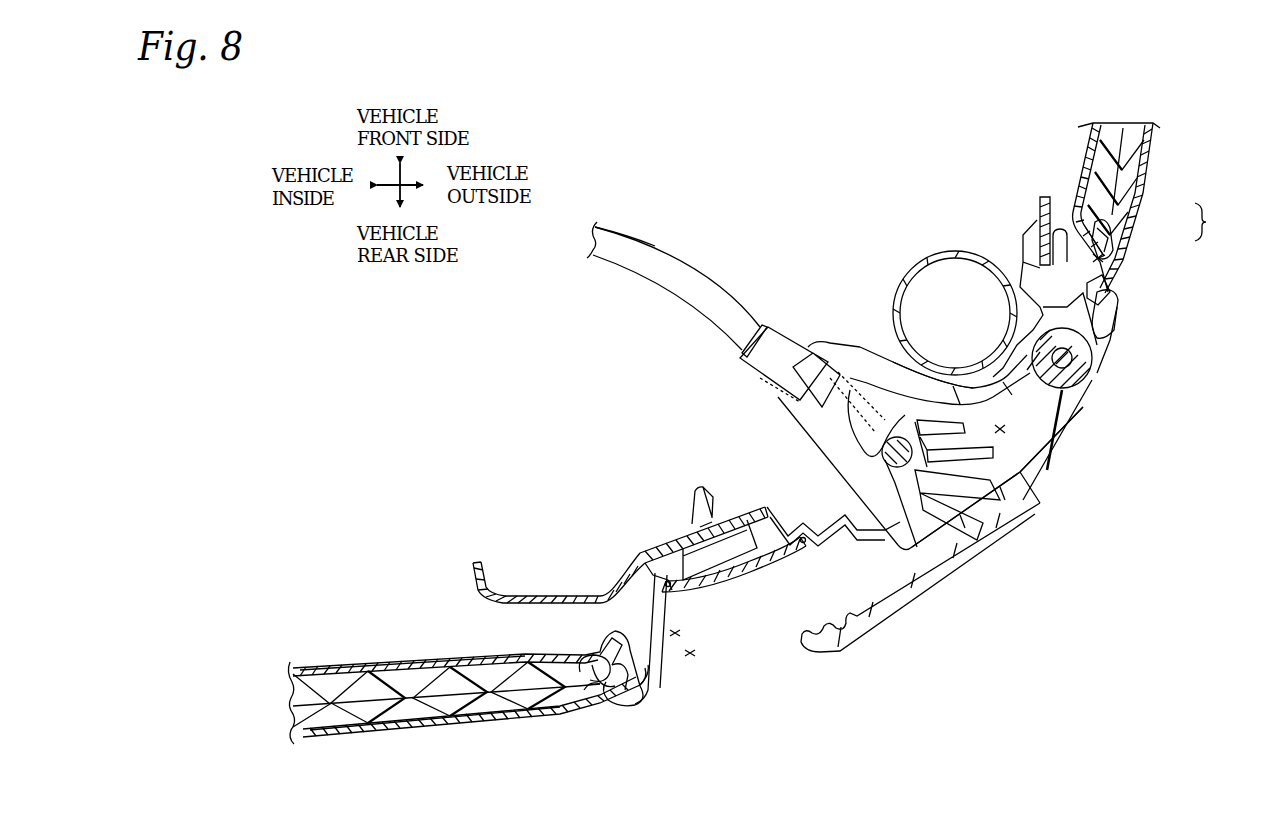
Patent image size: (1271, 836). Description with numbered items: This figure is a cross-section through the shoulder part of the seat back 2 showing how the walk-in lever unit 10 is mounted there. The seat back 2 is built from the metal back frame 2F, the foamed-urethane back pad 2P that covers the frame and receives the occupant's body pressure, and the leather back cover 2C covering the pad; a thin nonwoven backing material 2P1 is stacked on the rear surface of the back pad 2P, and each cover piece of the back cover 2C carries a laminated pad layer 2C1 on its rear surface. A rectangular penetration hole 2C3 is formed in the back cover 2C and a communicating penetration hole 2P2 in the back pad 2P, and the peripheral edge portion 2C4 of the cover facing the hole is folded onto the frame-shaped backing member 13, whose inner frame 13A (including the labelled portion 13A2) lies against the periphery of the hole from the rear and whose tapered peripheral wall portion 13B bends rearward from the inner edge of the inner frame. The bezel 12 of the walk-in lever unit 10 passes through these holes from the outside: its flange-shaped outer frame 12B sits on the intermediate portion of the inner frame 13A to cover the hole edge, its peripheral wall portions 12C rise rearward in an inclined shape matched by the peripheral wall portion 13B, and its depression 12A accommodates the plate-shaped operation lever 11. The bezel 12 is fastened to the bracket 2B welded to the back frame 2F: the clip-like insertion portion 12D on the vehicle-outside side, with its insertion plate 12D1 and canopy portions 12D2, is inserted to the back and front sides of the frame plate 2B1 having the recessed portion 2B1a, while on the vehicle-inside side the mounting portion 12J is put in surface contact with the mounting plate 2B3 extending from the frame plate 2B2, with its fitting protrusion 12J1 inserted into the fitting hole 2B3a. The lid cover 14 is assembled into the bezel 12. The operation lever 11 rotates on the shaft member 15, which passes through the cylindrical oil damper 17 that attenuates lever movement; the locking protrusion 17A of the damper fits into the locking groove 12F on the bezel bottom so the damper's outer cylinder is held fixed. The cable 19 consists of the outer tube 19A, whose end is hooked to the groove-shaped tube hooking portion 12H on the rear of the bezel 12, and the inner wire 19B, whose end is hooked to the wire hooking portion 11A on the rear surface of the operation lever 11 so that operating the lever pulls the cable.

The seat back 2 is at (826, 193).
The back pad 2P is at (395, 690).
The backing material 2P1 is at (352, 666).
The penetration hole 2P2 is at (675, 640).
The back cover 2C is at (478, 730).
The laminated pad layer 2C1 is at (520, 718).
The penetration hole 2C3 is at (690, 660).
The peripheral edge portion 2C4 is at (641, 692).
The bracket 2B is at (643, 553).
The frame plate 2B1 is at (1046, 200).
The recessed portion 2B1a is at (1025, 262).
The frame plate 2B2 is at (545, 600).
The mounting plate 2B3 is at (752, 512).
The fitting hole 2B3a is at (706, 530).
The back frame 2F is at (923, 263).
The walk-in lever unit 10 is at (1097, 517).
The operation lever 11 is at (1018, 503).
The wire hooking portion 11A is at (905, 472).
The bezel 12 is at (1023, 382).
The depression 12A is at (1003, 432).
The outer frame 12B is at (623, 710).
The peripheral wall portion 12C is at (660, 615).
The insertion portion 12D is at (1155, 208).
The insertion plate 12D1 is at (1062, 242).
The canopy portions 12D2 is at (1103, 237).
The locking groove 12F is at (1015, 356).
The tube hooking portion 12H is at (822, 350).
The mounting portion 12J is at (740, 528).
The fitting protrusion 12J1 is at (710, 495).
The backing member 13 is at (580, 657).
The inner frame 13A is at (588, 692).
The clip engaging portion 13A2 is at (598, 648).
The peripheral wall portion 13B is at (617, 640).
The lid cover 14 is at (763, 576).
The shaft member 15 is at (1070, 362).
The oil damper 17 is at (1068, 380).
The locking protrusion 17A is at (1058, 395).
The cable 19 is at (712, 290).
The outer tube 19A is at (650, 256).
The inner wire 19B is at (843, 396).